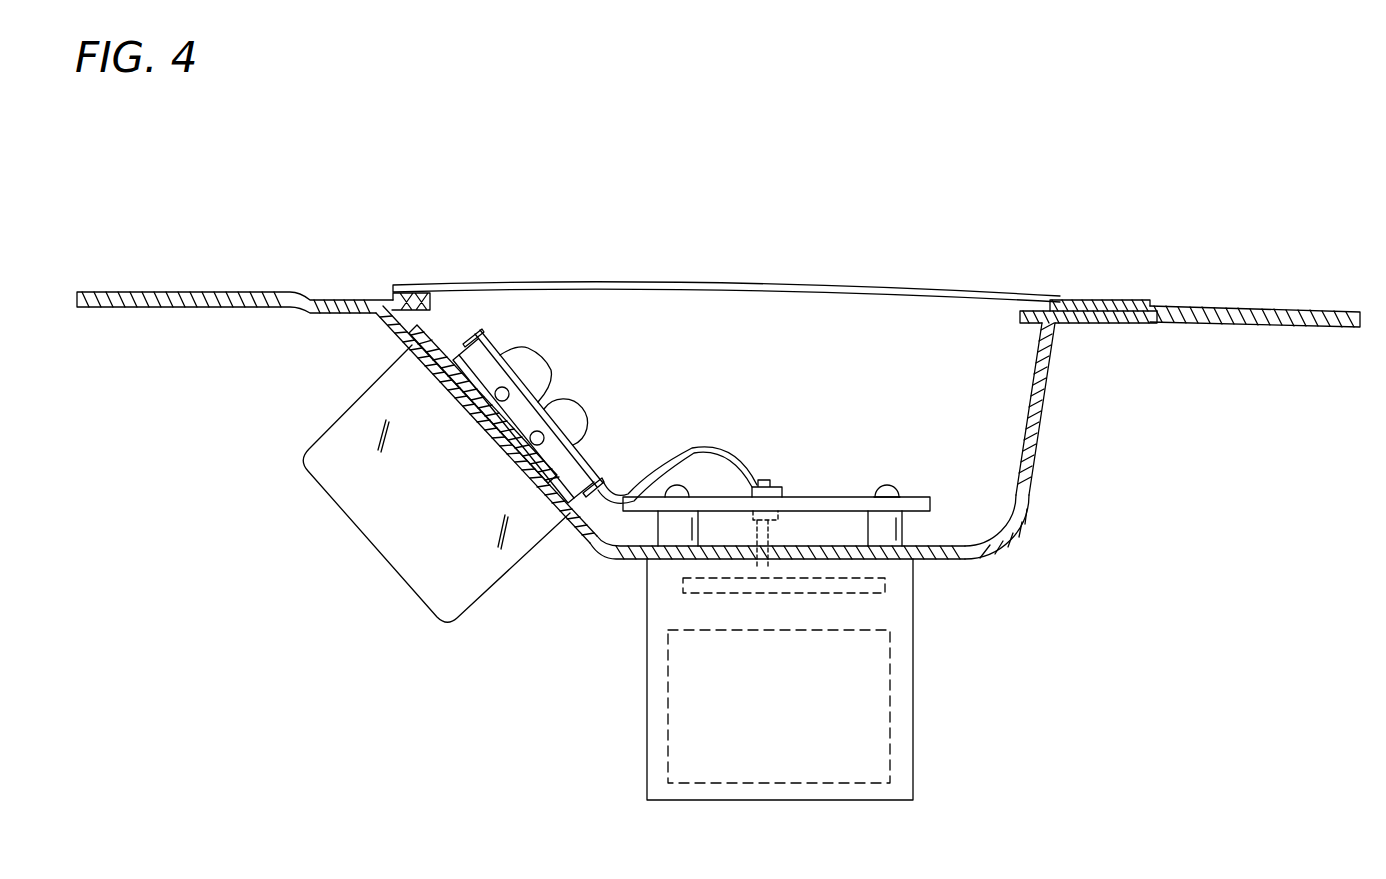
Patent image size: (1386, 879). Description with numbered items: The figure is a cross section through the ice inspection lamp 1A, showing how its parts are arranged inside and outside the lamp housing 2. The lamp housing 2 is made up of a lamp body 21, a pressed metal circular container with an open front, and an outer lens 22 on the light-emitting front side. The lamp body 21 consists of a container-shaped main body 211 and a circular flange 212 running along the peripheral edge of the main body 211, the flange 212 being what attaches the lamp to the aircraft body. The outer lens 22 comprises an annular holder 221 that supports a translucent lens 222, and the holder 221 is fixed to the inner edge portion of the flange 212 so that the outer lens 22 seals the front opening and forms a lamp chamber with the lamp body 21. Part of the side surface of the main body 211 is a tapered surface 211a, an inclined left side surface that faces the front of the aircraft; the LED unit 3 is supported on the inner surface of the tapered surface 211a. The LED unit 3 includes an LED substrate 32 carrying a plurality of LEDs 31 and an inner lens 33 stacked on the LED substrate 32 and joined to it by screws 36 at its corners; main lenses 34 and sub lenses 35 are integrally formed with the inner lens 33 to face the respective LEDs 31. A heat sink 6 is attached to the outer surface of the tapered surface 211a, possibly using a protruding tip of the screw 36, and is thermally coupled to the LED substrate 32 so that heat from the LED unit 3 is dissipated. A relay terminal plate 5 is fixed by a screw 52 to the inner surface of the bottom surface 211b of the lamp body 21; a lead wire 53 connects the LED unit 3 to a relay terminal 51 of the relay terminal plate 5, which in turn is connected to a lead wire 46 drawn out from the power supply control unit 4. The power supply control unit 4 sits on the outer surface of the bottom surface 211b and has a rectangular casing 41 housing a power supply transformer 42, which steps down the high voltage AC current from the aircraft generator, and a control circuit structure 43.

The ice inspection lamp 1A is at (713, 252).
The lamp housing 2 is at (1100, 412).
The lamp body 21 is at (1017, 533).
The main body 211 is at (1033, 487).
The tapered surface 211a is at (575, 532).
The bottom surface 211b is at (945, 565).
The outer lens 22 is at (1123, 214).
The holder 221 is at (985, 297).
The lens 222 is at (1105, 300).
The flange 212 is at (1242, 305).
The LED unit 3 is at (637, 367).
The LED 31 is at (483, 427).
The LED substrate 32 is at (423, 367).
The inner lens 33 is at (492, 352).
The main lens 34 is at (587, 418).
The sub lens 35 is at (553, 364).
The screw 36 is at (480, 330).
The power supply control unit 4 is at (779, 687).
The casing 41 is at (643, 740).
The power supply transformer 42 is at (893, 742).
The control circuit structure 43 is at (900, 597).
The lead wire 46 is at (760, 532).
The relay terminal plate 5 is at (913, 493).
The relay terminal 51 is at (785, 488).
The screw 52 is at (878, 490).
The lead wire 53 is at (727, 450).
The heat sink 6 is at (375, 553).